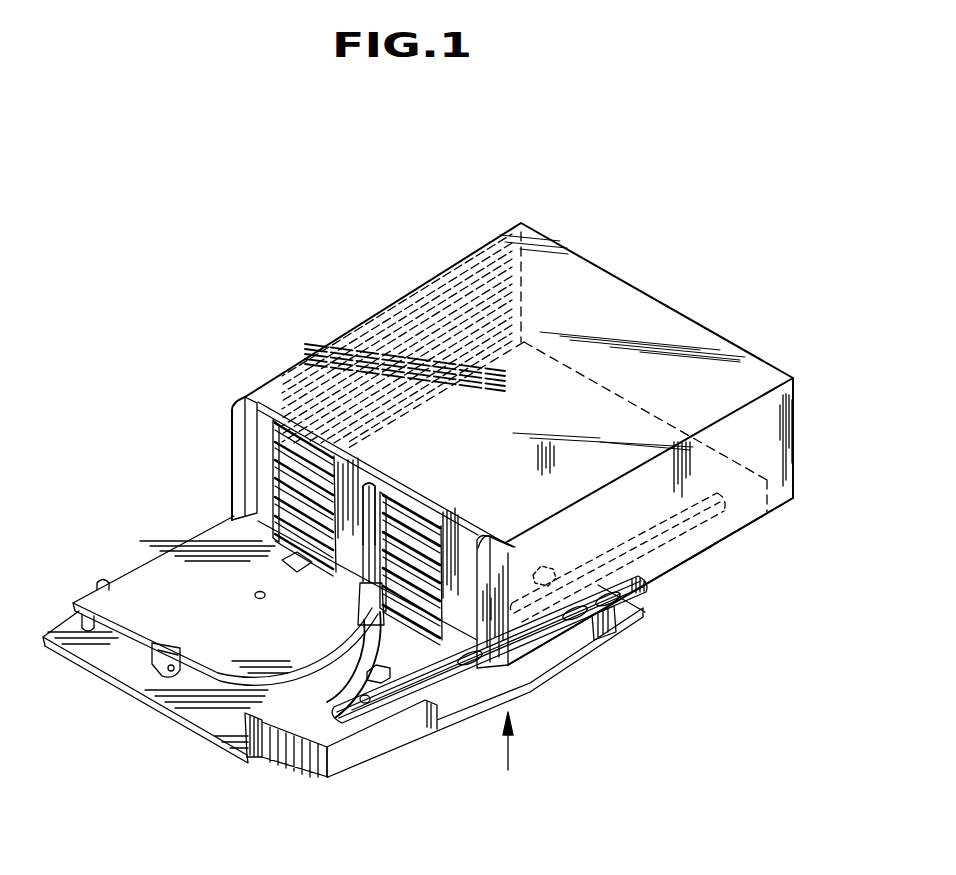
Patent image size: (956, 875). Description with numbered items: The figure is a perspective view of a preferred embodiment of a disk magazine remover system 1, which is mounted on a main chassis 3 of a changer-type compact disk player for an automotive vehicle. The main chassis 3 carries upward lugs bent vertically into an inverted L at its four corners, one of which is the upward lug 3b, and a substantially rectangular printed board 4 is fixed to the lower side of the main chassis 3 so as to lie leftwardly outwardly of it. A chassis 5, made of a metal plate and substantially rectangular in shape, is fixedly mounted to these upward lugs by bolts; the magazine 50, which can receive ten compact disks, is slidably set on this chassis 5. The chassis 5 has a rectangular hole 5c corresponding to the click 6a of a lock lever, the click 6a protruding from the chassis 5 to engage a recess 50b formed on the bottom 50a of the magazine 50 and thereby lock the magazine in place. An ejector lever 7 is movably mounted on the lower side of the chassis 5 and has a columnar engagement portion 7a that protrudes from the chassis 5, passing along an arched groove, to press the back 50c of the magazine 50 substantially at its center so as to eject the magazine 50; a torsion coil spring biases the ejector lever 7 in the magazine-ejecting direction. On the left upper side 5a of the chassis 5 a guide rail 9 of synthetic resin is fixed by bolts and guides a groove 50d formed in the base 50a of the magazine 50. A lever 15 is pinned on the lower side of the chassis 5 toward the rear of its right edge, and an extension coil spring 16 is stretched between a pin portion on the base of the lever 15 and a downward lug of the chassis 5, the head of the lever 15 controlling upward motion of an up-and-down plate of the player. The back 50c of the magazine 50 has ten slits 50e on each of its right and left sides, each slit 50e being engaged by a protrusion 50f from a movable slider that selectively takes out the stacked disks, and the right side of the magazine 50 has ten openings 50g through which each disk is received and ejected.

The disk magazine remover system 1 is at (517, 803).
The main chassis 3 is at (207, 720).
The upward lug 3b is at (260, 760).
The printed board 4 is at (533, 676).
The chassis 5 is at (140, 612).
The left upper side of chassis 5a is at (290, 732).
The rectangular hole 5c is at (387, 670).
The click 6a is at (390, 690).
The ejector lever 7 is at (328, 718).
The engagement portion 7a is at (357, 543).
The guide rail 9 is at (366, 704).
The lever 15 is at (95, 582).
The extension coil spring 16 is at (152, 655).
The magazine 50 is at (730, 328).
The bottom of magazine 50a is at (757, 520).
The recess 50b is at (555, 572).
The back of magazine 50c is at (490, 532).
The groove 50d is at (700, 553).
The slits 50e is at (280, 417).
The protrusion 50f is at (270, 478).
The openings 50g is at (383, 320).